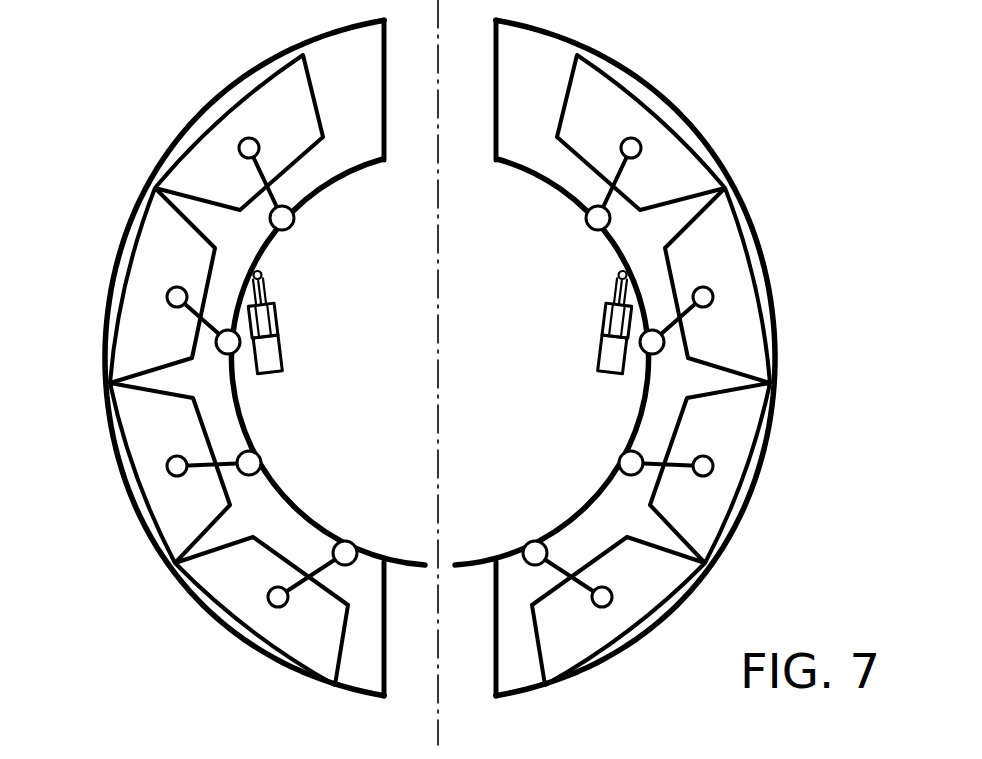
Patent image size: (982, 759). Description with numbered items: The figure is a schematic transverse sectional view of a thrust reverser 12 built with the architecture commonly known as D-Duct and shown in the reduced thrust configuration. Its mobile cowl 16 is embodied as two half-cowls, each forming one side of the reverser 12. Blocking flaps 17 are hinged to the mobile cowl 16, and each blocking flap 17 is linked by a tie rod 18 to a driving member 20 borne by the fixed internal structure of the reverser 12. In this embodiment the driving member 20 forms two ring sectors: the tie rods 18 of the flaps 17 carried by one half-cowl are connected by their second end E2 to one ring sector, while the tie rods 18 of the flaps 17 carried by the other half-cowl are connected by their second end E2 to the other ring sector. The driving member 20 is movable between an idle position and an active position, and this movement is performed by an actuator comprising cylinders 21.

The thrust reverser 12 is at (434, 353).
The mobile external structure 16 is at (328, 34).
The blocking flaps 17 is at (208, 555).
The tie rods 18 is at (440, 372).
The driving member 20 is at (408, 562).
The cylinders 21 is at (272, 343).
The second end E2 is at (285, 226).